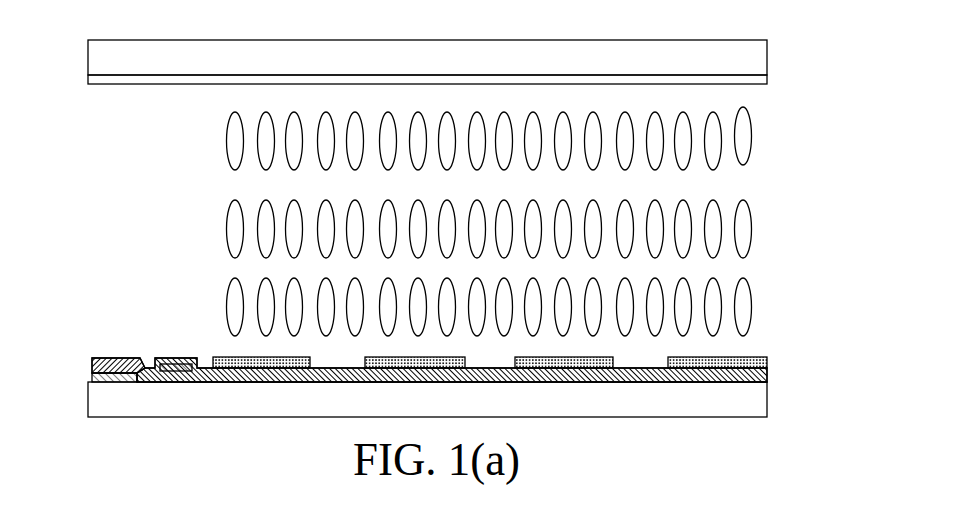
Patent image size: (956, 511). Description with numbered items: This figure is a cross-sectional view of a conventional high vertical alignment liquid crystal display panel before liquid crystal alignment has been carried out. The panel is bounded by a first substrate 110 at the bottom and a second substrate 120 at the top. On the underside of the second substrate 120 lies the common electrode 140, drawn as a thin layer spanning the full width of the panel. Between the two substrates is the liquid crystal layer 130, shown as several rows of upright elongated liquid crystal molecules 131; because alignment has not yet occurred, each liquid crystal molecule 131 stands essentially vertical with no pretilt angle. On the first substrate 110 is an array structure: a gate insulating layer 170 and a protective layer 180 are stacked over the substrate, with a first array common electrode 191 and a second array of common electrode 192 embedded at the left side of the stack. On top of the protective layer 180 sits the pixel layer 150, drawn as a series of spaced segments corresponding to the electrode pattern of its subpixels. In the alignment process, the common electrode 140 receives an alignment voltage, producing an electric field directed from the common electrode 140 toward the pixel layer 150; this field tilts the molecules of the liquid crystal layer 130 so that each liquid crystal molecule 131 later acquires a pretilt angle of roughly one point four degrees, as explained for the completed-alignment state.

The first substrate 110 is at (767, 403).
The second substrate 120 is at (767, 47).
The liquid crystal layer 130 is at (736, 185).
The liquid crystal molecule 131 is at (751, 138).
The common electrode 140 is at (767, 80).
The pixel layer 150 is at (765, 348).
The gate insulating layer 170 is at (136, 364).
The protective layer 180 is at (767, 375).
The first array common electrode 191 is at (92, 379).
The second array of common electrode 192 is at (194, 362).